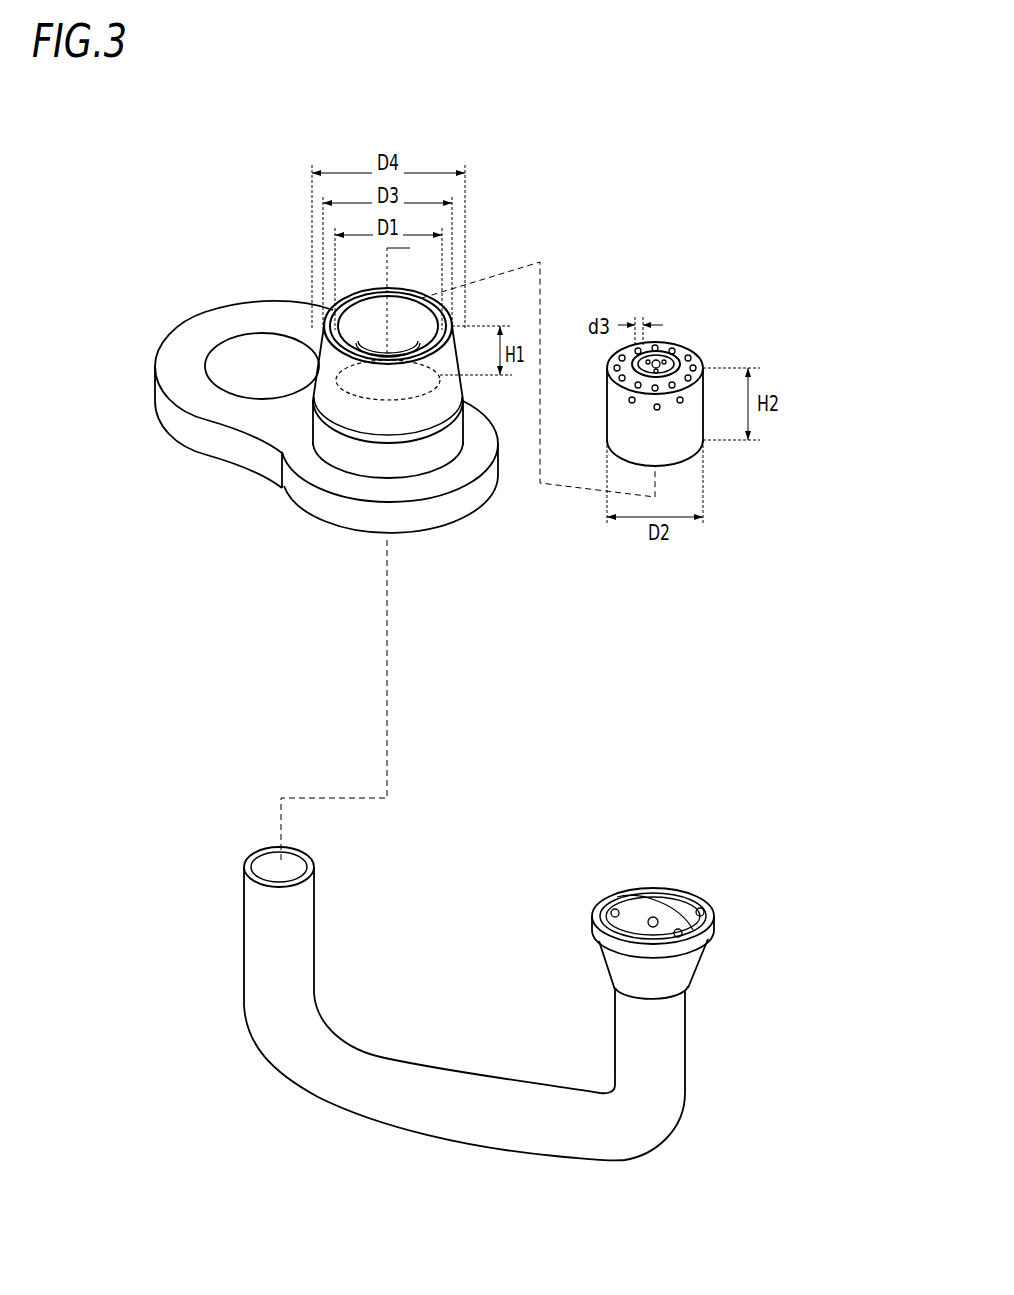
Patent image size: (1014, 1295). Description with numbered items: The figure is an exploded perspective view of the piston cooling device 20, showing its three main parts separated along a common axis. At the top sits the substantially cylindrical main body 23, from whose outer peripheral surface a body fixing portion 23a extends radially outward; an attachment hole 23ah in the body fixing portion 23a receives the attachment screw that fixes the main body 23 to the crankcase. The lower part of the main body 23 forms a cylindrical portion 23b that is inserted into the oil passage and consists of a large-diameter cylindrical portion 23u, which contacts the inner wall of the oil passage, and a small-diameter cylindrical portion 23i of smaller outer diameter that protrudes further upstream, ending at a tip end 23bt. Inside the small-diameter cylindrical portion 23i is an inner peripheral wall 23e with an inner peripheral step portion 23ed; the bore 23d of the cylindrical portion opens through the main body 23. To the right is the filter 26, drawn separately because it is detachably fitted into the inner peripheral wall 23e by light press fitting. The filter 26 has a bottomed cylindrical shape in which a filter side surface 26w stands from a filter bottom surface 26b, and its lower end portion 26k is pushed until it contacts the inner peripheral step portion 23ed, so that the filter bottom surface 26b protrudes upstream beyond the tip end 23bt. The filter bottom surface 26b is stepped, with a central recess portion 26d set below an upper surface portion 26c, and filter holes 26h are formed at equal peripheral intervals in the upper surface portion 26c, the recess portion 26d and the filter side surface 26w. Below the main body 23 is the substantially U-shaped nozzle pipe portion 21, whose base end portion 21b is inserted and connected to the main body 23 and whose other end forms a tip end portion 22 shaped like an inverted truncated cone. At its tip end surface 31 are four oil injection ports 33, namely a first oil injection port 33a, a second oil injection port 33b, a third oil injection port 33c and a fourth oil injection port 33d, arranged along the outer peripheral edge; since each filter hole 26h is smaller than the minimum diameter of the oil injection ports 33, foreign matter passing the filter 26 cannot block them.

The piston cooling device 20 is at (494, 958).
The nozzle pipe portion 21 is at (464, 1004).
The base end portion 21b is at (303, 920).
The tip end portion 22 is at (703, 879).
The main body 23 is at (343, 354).
The body fixing portion 23a is at (210, 327).
The attachment hole 23ah is at (255, 345).
The cylindrical portion 23b is at (285, 455).
The small-diameter cylindrical portion 23i is at (327, 377).
The large-diameter cylindrical portion 23u is at (327, 457).
The inner peripheral wall 23e is at (367, 317).
The inner peripheral step portion 23ed is at (438, 291).
The boss bore 23d is at (403, 310).
The tip end 23bt is at (408, 285).
The filter 26 is at (666, 355).
The filter bottom surface 26b is at (673, 320).
The upper surface portion 26c is at (697, 350).
The recess portion 26d is at (670, 328).
The filter holes 26h is at (617, 353).
The filter side surface 26w is at (630, 430).
The lower end portion 26k is at (690, 463).
The tip end surface 31 is at (673, 883).
The oil injection ports 33 is at (713, 848).
The first oil injection port 33a is at (703, 900).
The second oil injection port 33b is at (725, 901).
The third oil injection port 33c is at (690, 893).
The fourth oil injection port 33d is at (643, 887).